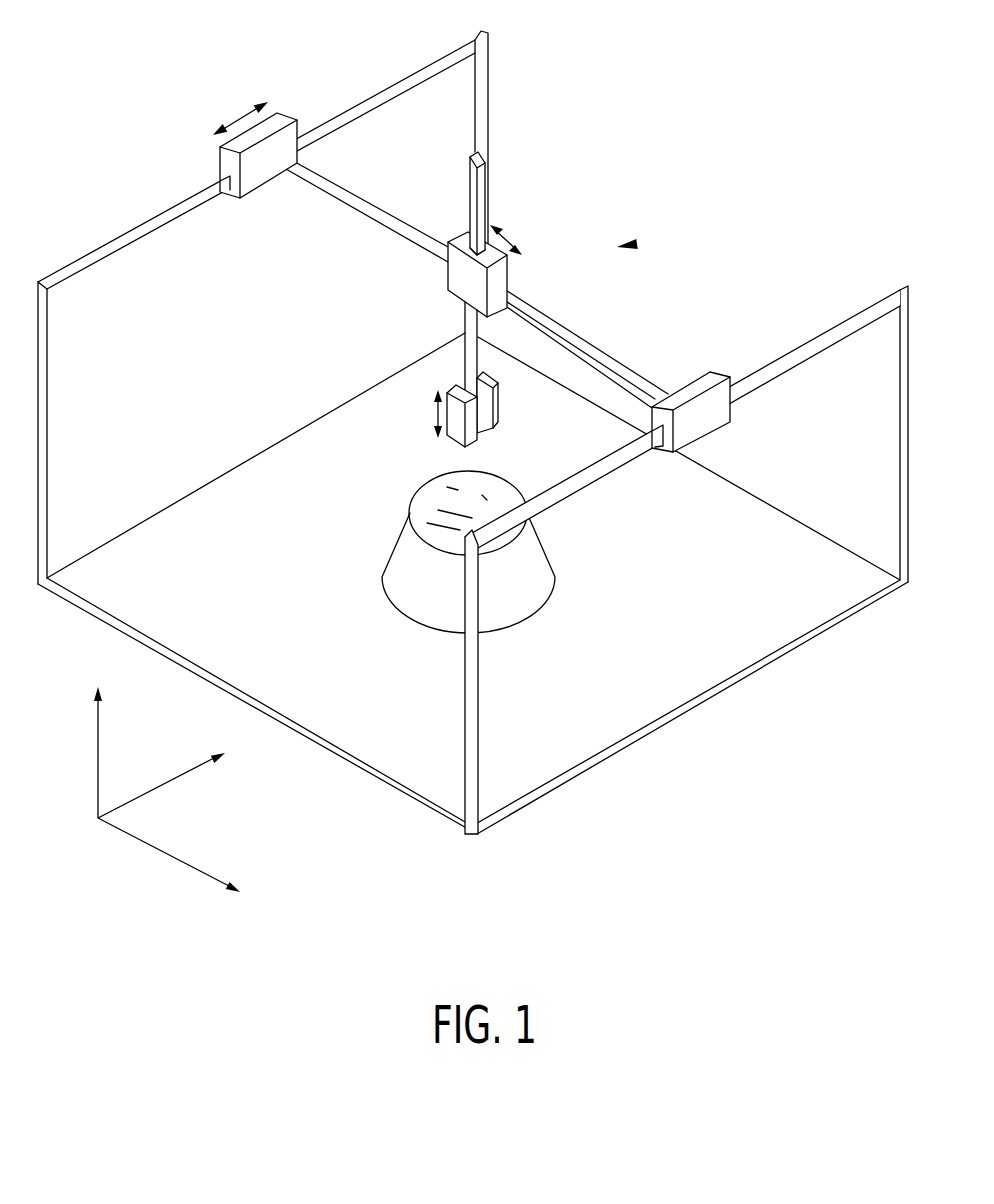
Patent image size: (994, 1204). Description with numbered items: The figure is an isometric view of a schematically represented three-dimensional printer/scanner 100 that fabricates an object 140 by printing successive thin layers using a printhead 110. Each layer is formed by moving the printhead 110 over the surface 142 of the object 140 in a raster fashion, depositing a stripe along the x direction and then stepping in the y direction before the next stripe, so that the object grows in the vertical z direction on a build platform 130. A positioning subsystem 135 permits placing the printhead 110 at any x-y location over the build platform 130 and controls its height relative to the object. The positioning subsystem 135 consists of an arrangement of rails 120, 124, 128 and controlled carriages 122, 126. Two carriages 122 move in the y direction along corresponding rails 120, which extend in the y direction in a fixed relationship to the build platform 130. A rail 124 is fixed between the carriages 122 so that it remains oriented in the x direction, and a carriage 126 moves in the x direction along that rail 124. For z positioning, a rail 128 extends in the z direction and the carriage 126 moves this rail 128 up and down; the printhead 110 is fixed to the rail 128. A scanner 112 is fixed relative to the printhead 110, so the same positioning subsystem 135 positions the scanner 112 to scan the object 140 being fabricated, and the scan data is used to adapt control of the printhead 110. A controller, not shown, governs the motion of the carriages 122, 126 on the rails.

The three-dimensional printer/scanner 100 is at (473, 472).
The printhead 110 is at (498, 426).
The scanner 112 is at (449, 444).
The rails 120 is at (397, 84).
The carriages 122 is at (217, 167).
The rail 124 is at (385, 213).
The carriage 126 is at (447, 273).
The rail 128 is at (487, 216).
The build platform 130 is at (837, 620).
The positioning subsystem 135 is at (637, 244).
The object 140 is at (535, 593).
The surface 142 is at (483, 489).